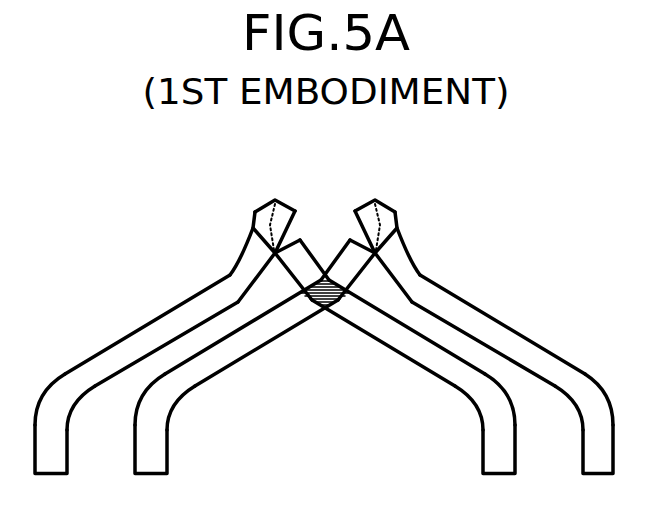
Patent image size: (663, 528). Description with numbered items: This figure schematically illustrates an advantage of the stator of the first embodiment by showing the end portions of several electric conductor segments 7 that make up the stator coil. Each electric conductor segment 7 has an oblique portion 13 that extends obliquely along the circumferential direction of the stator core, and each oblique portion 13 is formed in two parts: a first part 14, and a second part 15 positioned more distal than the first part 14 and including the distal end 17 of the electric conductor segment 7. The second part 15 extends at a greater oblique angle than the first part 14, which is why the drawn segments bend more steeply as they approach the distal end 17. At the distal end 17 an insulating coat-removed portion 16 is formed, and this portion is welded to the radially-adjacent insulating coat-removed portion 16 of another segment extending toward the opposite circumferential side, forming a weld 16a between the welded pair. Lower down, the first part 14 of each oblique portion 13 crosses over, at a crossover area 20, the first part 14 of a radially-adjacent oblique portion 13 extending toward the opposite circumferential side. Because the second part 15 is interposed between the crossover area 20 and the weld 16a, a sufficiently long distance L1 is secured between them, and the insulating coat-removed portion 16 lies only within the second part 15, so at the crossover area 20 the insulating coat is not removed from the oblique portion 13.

The electric conductor segment 7 is at (72, 434).
The oblique portion 13 is at (177, 300).
The first part 14 is at (203, 360).
The second part 15 is at (262, 258).
The insulating coat-removed portion 16 is at (272, 228).
The weld 16a is at (263, 228).
The distal end 17 is at (273, 201).
The crossover area 20 is at (320, 307).
The distance L1 is at (339, 282).